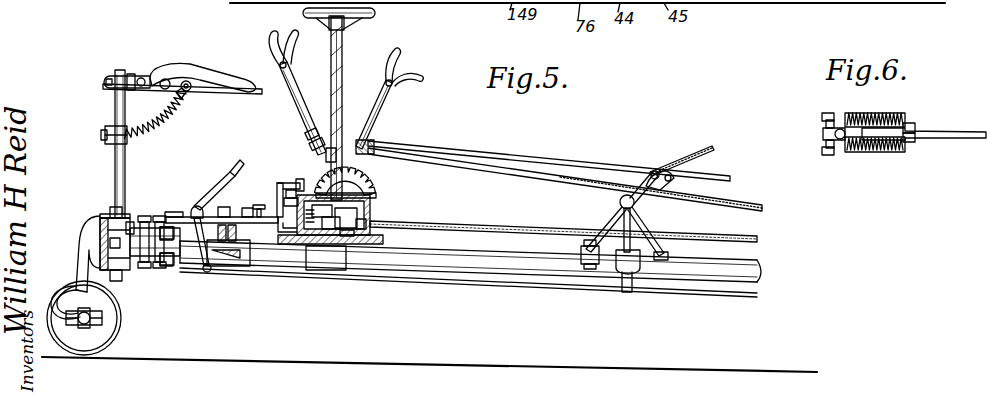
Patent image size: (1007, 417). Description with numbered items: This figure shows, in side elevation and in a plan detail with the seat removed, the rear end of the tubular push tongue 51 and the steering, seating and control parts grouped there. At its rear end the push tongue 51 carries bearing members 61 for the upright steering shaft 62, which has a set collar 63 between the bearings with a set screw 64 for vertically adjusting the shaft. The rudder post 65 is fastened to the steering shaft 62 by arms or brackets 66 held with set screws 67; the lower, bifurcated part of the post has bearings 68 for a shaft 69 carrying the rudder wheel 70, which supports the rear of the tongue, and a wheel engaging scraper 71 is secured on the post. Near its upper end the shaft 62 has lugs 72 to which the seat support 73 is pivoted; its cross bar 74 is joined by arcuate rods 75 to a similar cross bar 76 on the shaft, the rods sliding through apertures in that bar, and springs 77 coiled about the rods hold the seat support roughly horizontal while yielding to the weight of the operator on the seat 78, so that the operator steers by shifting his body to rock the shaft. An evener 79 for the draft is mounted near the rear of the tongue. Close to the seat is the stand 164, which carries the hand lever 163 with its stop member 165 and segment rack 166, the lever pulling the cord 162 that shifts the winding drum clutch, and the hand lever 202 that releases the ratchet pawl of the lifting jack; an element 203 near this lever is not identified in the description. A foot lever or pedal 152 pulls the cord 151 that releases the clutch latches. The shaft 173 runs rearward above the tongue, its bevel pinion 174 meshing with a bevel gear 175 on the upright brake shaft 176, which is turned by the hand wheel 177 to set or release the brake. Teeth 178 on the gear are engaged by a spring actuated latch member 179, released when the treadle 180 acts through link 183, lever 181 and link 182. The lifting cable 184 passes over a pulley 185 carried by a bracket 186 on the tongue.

In FIG. 5, the push tongue 51 is at (522, 268).
In FIG. 5, the bearing members 61 is at (150, 228).
In FIG. 5, the steering shaft 62 is at (126, 162).
In FIG. 6, the steering shaft 62 is at (830, 119).
In FIG. 5, the set collar 63 is at (96, 230).
In FIG. 5, the set screw 64 is at (100, 246).
In FIG. 5, the rudder post 65 is at (98, 216).
In FIG. 5, the arms or brackets 66 is at (130, 222).
In FIG. 5, the set screws 67 is at (112, 210).
In FIG. 5, the bearings 68 is at (100, 326).
In FIG. 5, the shaft 69 is at (84, 326).
In FIG. 5, the rudder wheel 70 is at (120, 322).
In FIG. 5, the wheel engaging scraper 71 is at (58, 294).
In FIG. 5, the lugs 72 is at (133, 72).
In FIG. 5, the seat support 73 is at (240, 93).
In FIG. 6, the seat support 73 is at (961, 129).
In FIG. 5, the cross bar 74 is at (191, 90).
In FIG. 6, the cross bar 74 is at (912, 125).
In FIG. 5, the arcuate rods 75 is at (168, 118).
In FIG. 6, the arcuate rods 75 is at (888, 113).
In FIG. 5, the cross bar 76 is at (110, 127).
In FIG. 6, the cross bar 76 is at (832, 155).
In FIG. 5, the springs 77 is at (139, 127).
In FIG. 6, the springs 77 is at (860, 111).
In FIG. 5, the seat 78 is at (170, 66).
In FIG. 5, the evener 79 is at (215, 212).
In FIG. 5, the pull cord 151 is at (468, 286).
In FIG. 5, the foot lever or pedal 152 is at (230, 180).
In FIG. 5, the pull cord 162 is at (600, 164).
In FIG. 5, the hand lever 163 is at (294, 101).
In FIG. 5, the stand 164 is at (371, 196).
In FIG. 5, the stop member 165 is at (328, 132).
In FIG. 5, the segment rack 166 is at (338, 150).
In FIG. 5, the shaft 173 is at (470, 225).
In FIG. 5, the bevel pinion 174 is at (340, 245).
In FIG. 5, the bevel gear 175 is at (346, 245).
In FIG. 5, the brake shaft 176 is at (343, 71).
In FIG. 5, the hand wheel 177 is at (374, 12).
In FIG. 5, the teeth 178 is at (368, 188).
In FIG. 5, the spring actuated latch member 179 is at (322, 244).
In FIG. 5, the treadle 180 is at (300, 244).
In FIG. 5, the lever 181 is at (292, 181).
In FIG. 5, the link 182 is at (290, 190).
In FIG. 5, the link 183 is at (280, 180).
In FIG. 5, the flexible element 184 is at (752, 200).
In FIG. 5, the pulley 185 is at (650, 168).
In FIG. 5, the bracket 186 is at (612, 223).
In FIG. 5, the hand lever 202 is at (386, 109).
In FIG. 5, the nut 203 is at (378, 150).